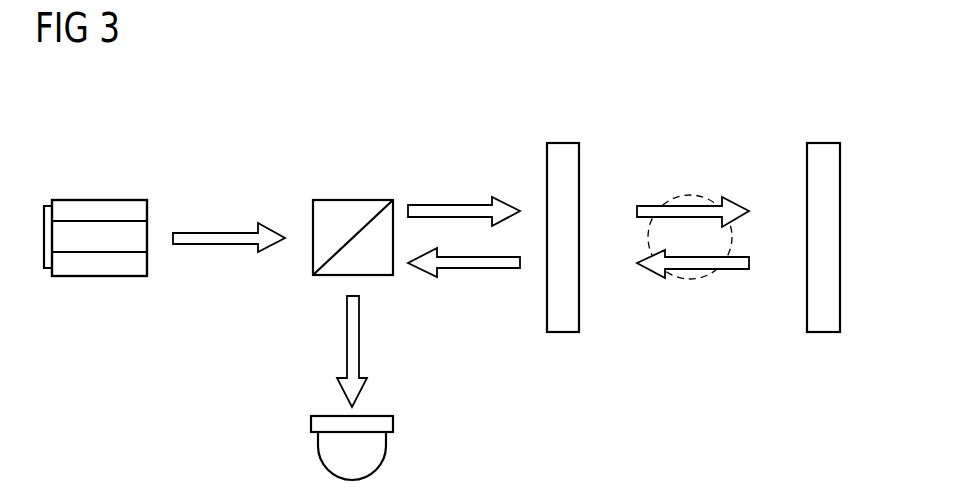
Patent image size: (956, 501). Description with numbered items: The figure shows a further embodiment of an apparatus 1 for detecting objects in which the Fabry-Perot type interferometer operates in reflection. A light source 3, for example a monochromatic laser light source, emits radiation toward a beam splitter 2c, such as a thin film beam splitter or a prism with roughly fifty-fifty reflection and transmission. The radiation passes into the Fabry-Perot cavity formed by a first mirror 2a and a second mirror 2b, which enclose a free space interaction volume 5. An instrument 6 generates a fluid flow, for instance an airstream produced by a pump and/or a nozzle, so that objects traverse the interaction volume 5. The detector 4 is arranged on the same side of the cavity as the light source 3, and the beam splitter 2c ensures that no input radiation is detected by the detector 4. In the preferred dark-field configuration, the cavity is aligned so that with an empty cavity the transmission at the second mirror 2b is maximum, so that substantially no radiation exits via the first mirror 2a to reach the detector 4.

The apparatus for detecting objects 1 is at (70, 157).
The first mirror 2a is at (563, 153).
The second mirror 2b is at (823, 152).
The beam splitter 2c is at (350, 210).
The light source 3 is at (100, 208).
The detector 4 is at (373, 453).
The interaction volume 5 is at (618, 178).
The instrument for generating a fluid flow 6 is at (730, 237).